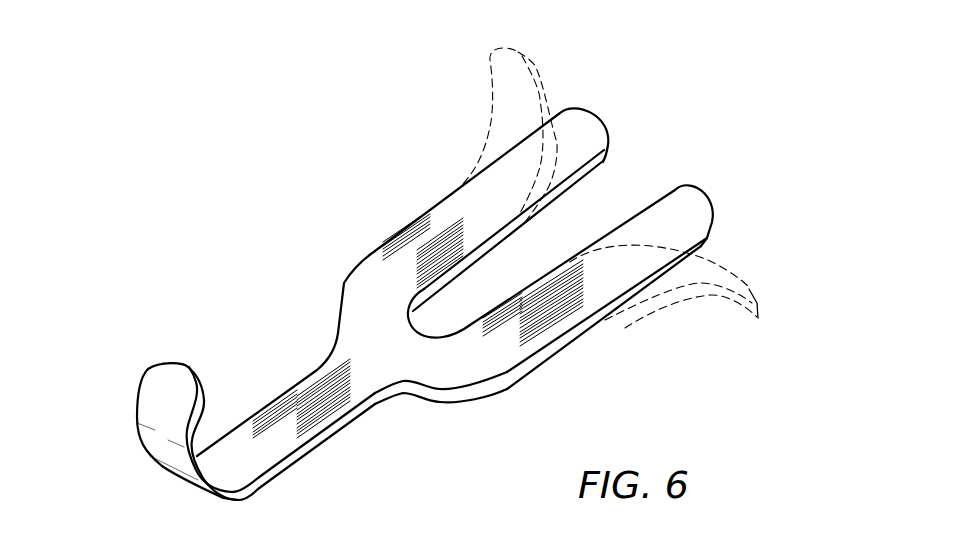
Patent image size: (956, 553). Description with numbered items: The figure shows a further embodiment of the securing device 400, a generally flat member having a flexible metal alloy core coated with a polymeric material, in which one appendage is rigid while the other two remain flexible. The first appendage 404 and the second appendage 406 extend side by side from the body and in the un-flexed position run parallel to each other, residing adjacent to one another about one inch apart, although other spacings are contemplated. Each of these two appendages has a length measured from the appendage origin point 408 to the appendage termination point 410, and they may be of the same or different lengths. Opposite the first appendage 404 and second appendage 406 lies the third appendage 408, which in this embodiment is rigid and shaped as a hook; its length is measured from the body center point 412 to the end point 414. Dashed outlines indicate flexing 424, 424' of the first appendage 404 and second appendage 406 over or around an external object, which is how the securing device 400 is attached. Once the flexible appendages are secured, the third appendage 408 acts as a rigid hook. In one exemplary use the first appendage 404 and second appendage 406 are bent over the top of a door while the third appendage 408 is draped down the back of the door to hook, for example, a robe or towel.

The securing device 400 is at (358, 225).
The first appendage 404 is at (587, 123).
The second appendage 406 is at (672, 218).
The third appendage 408 is at (165, 392).
The appendage termination point 410 is at (697, 195).
The body center point 412 is at (393, 347).
The end point 414 is at (173, 361).
The flexing of first appendage 424 is at (528, 120).
The flexing of second appendage 424' is at (703, 286).